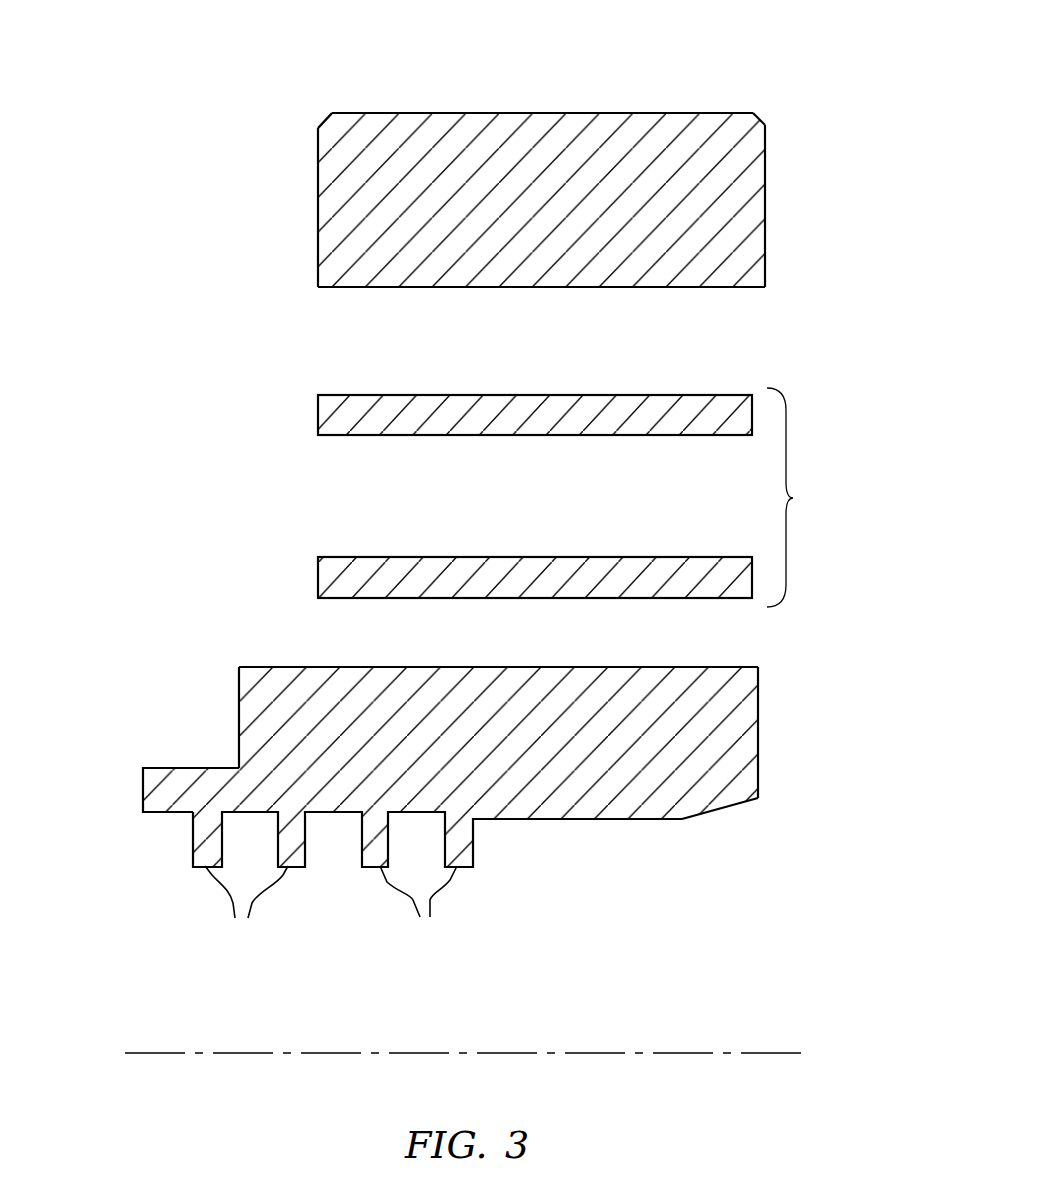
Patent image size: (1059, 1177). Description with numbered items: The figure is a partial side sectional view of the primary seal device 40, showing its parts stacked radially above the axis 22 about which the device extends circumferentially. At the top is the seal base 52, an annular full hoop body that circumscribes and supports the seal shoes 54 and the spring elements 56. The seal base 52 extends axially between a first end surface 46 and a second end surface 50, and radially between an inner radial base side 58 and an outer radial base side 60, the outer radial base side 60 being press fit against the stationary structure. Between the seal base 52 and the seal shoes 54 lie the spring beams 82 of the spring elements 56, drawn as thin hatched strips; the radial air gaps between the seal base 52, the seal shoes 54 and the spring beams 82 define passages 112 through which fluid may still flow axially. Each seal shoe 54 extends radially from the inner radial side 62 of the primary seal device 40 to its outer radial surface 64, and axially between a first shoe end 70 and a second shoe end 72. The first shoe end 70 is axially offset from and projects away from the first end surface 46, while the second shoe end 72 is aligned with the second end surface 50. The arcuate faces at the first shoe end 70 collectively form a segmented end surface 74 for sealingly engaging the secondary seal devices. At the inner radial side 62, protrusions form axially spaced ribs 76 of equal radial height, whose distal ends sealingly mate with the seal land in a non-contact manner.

The primary seal device 40 is at (753, 68).
The first end surface 46 is at (317, 195).
The second end surface 50 is at (767, 143).
The seal base 52 is at (768, 208).
The inner radial base side 58 is at (347, 288).
The outer radial base side 60 is at (383, 113).
The passages 112 is at (568, 362).
The spring elements 56 is at (530, 497).
The spring beams 82 is at (318, 420).
The seal shoes 54 is at (759, 737).
The outer radial surface 64 is at (287, 667).
The end surface 74 is at (238, 715).
The first shoe end 70 is at (142, 785).
The second shoe end 72 is at (759, 763).
The inner radial side 62 is at (505, 865).
The ribs 76 is at (331, 908).
The axis 22 is at (778, 1053).